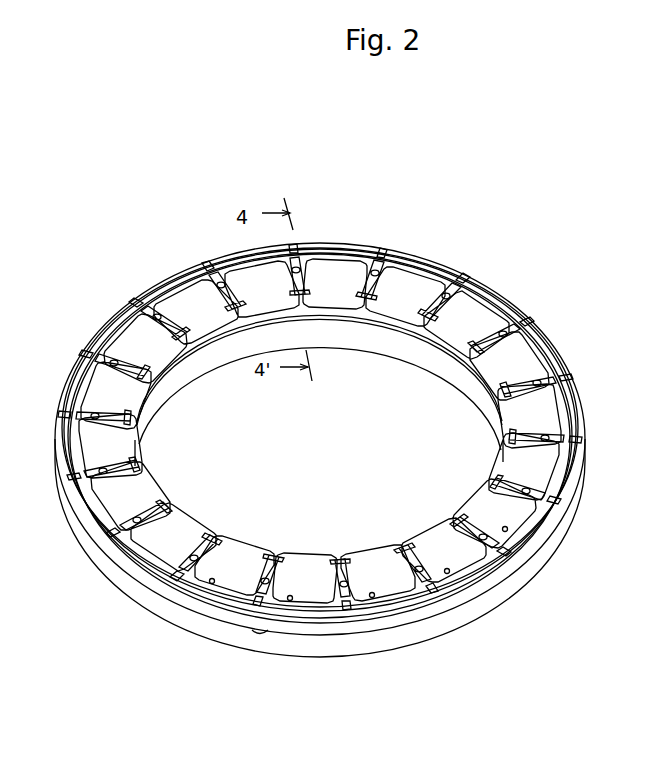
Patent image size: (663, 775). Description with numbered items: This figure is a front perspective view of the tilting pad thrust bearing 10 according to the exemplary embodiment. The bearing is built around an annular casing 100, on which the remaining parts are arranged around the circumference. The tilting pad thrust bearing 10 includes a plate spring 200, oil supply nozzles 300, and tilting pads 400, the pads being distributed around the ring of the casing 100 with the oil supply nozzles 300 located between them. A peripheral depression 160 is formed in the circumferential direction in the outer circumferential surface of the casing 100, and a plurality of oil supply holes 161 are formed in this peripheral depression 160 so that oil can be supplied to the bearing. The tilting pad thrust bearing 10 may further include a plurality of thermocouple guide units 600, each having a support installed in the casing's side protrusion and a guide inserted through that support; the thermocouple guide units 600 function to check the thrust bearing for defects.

The tilting pad thrust bearing 10 is at (143, 138).
The casing 100 is at (88, 600).
The peripheral depression 160 is at (167, 612).
The oil supply hole 161 is at (260, 634).
The plate spring 200 is at (230, 297).
The oil supply nozzle 300 is at (143, 283).
The tilting pad 400 is at (102, 314).
The thermocouple guide unit 600 is at (412, 230).